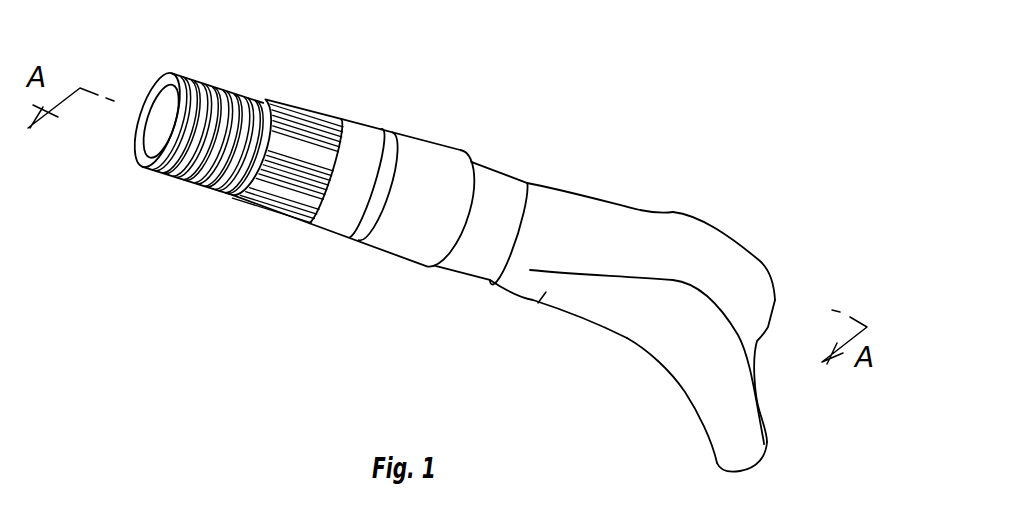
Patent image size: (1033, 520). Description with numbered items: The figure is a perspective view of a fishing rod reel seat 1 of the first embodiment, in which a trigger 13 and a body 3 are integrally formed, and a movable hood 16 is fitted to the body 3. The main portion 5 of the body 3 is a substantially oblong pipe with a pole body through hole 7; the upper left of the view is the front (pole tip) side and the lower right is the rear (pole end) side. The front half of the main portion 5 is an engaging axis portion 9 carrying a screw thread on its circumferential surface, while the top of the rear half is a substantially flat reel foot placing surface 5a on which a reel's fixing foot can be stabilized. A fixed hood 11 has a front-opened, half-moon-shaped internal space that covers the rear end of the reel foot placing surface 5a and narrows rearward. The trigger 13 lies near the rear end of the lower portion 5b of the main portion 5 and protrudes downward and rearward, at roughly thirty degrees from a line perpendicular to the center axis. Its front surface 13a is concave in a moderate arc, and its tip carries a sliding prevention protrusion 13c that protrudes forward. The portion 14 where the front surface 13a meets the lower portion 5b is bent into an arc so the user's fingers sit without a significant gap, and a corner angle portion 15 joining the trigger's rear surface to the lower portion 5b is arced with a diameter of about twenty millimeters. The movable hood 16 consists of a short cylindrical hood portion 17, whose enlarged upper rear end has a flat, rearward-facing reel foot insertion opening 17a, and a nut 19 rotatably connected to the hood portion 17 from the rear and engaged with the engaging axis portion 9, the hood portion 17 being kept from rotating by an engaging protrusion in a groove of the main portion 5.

The fishing rod reel seat 1 is at (777, 165).
The body 3 is at (776, 300).
The main portion 5 is at (543, 195).
The reel foot placing surface 5a is at (592, 194).
The lower portion 5b is at (528, 301).
The pole body through hole 7 is at (145, 125).
The engaging axis portion 9 is at (203, 187).
The fixed hood 11 is at (658, 211).
The trigger 13 is at (769, 437).
The front surface 13a is at (700, 388).
The sliding prevention protrusion 13c is at (718, 460).
The connecting portion 14 is at (661, 327).
The corner angle portion 15 is at (758, 347).
The movable hood 16 is at (462, 26).
The hood portion 17 is at (418, 145).
The reel foot insertion opening 17a is at (377, 187).
The nut 19 is at (355, 130).